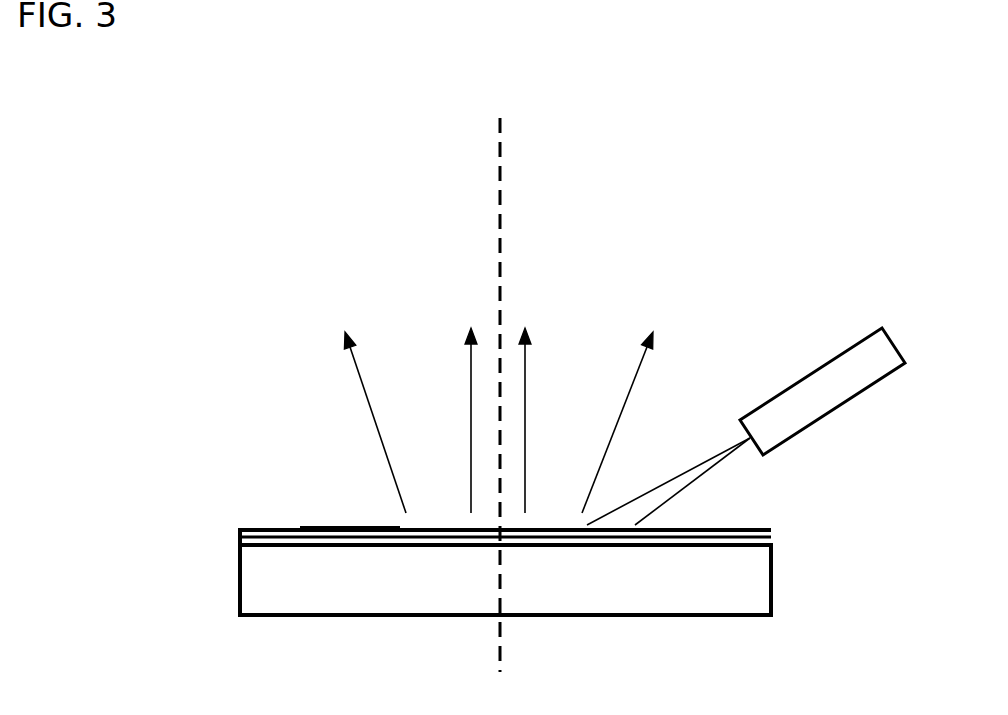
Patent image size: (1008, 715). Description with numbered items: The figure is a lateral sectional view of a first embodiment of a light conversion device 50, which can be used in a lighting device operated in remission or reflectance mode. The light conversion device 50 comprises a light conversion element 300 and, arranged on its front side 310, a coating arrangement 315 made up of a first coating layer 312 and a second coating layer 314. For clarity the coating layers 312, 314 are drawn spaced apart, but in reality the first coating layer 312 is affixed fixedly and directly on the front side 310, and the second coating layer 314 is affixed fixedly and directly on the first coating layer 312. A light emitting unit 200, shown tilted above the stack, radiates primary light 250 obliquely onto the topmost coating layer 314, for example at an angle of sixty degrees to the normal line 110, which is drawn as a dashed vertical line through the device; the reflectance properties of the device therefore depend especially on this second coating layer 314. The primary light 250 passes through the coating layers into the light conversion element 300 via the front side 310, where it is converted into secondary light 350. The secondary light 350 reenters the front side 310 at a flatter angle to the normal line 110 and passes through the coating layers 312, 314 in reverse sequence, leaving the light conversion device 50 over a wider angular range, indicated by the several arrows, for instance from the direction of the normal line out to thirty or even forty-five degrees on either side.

The light conversion device 50 is at (288, 363).
The normal line 110 is at (503, 215).
The light emitting unit 200 is at (830, 413).
The primary light 250 is at (700, 466).
The light conversion element 300 is at (238, 574).
The front side 310 is at (237, 527).
The first coating layer 312 is at (771, 538).
The second coating layer 314 is at (771, 530).
The coating arrangement 315 is at (335, 527).
The secondary light 350 is at (642, 353).